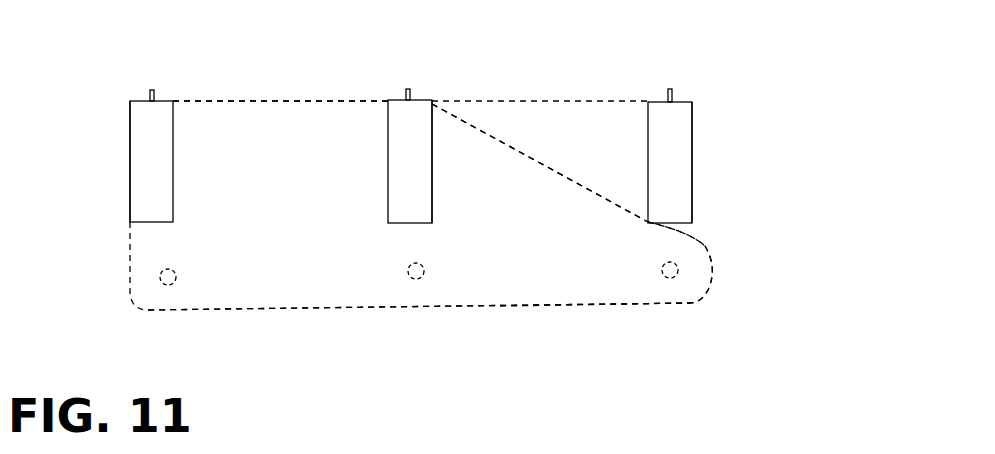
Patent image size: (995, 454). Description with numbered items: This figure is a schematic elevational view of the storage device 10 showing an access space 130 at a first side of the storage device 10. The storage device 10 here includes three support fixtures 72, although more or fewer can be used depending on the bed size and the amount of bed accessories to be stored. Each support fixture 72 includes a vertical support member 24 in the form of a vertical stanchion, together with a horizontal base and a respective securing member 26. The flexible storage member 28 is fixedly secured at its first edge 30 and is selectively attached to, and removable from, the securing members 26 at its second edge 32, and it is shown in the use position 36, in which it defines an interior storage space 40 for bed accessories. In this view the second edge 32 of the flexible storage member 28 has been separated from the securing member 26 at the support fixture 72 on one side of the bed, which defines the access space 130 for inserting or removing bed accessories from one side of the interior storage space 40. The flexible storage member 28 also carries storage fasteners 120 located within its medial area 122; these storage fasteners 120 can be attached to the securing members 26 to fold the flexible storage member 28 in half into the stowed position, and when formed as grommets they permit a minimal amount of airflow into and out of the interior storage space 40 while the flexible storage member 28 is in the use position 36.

The storage device 10 is at (100, 100).
The vertical support member 24 is at (145, 197).
The securing member 26 is at (153, 90).
The flexible storage member 28 is at (312, 322).
The first edge 30 is at (513, 100).
The second edge 32 is at (651, 216).
The use position 36 is at (328, 73).
The interior storage space 40 is at (188, 253).
The support fixture 72 is at (118, 148).
The storage fastener 120 is at (679, 272).
The medial area 122 is at (628, 315).
The access space 130 is at (541, 152).